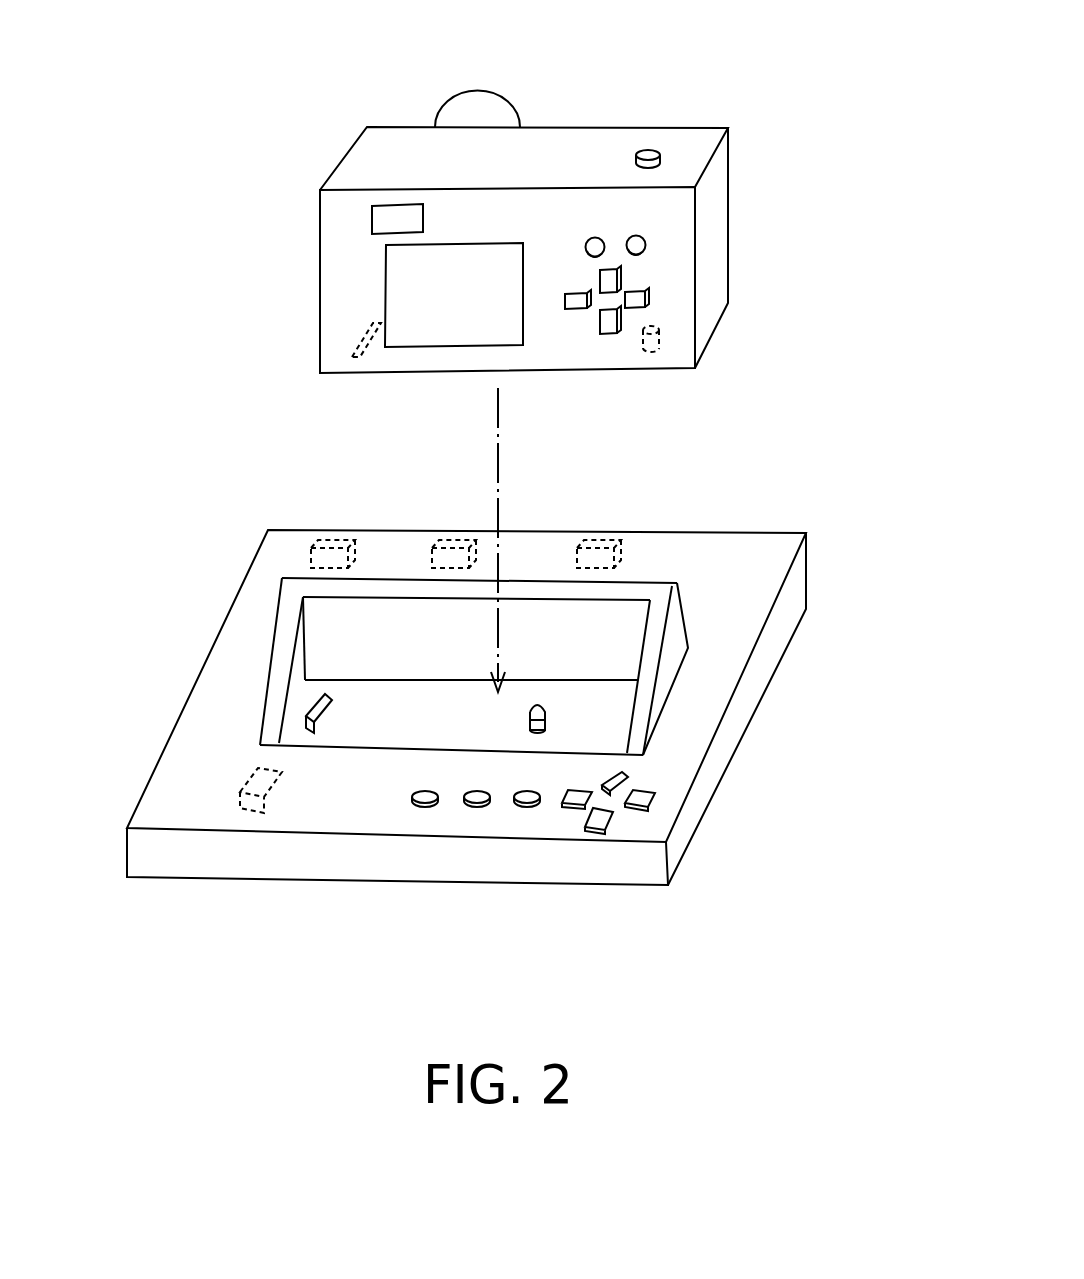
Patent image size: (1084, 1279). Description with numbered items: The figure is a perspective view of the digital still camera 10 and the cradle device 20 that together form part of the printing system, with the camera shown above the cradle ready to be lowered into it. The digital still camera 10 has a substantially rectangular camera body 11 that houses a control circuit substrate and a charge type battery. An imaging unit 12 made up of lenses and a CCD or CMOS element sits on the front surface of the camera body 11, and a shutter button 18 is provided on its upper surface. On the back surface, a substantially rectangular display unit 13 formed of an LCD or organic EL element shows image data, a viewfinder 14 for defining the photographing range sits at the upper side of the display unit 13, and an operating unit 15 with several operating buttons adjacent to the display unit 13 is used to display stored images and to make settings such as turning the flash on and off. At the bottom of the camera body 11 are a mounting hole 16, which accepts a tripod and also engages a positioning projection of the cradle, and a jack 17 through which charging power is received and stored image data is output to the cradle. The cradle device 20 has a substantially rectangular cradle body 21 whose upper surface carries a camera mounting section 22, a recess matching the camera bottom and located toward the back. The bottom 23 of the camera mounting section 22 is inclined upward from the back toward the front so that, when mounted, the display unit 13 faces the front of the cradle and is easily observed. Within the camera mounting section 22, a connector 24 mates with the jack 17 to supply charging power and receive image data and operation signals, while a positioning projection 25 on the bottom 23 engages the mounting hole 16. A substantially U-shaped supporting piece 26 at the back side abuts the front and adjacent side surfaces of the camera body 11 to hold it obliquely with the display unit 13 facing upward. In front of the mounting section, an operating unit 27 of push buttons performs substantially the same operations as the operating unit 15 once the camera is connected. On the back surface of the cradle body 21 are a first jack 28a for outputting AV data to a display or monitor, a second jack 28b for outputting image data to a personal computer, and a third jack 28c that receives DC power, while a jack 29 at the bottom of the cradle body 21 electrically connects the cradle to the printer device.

The digital still camera 10 is at (760, 142).
The camera body 11 is at (710, 300).
The imaging unit 12 is at (473, 92).
The display unit 13 is at (392, 272).
The viewfinder 14 is at (372, 218).
The operating unit 15 is at (639, 270).
The mounting hole 16 is at (660, 345).
The jack 17 is at (355, 368).
The shutter button 18 is at (651, 152).
The cradle device 20 is at (818, 558).
The cradle body 21 is at (738, 727).
The camera mounting section 22 is at (432, 735).
The bottom 23 is at (352, 732).
The connector 24 is at (305, 708).
The positioning projection 25 is at (537, 735).
The supporting piece 26 is at (641, 590).
The operating unit 27 is at (622, 830).
The first jack 28a is at (333, 545).
The second jack 28b is at (448, 547).
The third jack 28c is at (609, 547).
The jack 29 is at (270, 808).